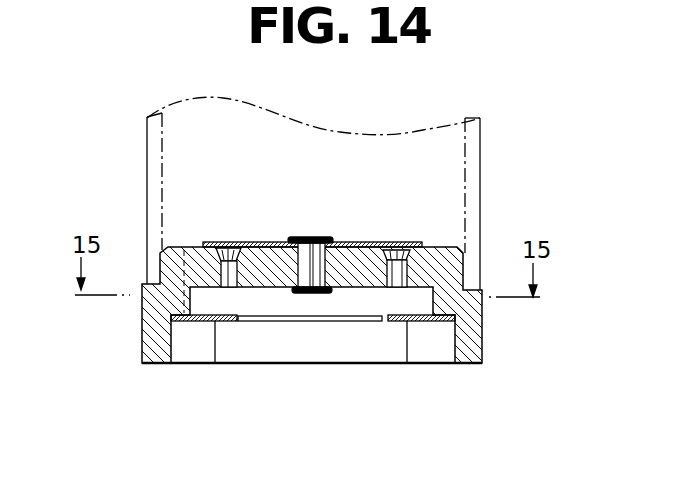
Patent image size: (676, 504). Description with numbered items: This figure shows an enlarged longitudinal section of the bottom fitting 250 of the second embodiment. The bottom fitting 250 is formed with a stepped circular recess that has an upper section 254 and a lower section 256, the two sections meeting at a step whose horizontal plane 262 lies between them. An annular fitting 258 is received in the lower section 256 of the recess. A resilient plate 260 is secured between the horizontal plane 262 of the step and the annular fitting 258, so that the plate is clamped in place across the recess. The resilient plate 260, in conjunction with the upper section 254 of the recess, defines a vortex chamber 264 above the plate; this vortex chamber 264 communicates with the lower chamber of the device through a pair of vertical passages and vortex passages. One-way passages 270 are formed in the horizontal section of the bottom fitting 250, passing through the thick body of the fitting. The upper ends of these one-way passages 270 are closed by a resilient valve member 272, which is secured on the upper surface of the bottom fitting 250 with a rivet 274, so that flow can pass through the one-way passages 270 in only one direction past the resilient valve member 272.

The bottom fitting 250 is at (463, 253).
The upper section 254 is at (422, 327).
The lower section 256 is at (455, 347).
The annular fitting 258 is at (185, 343).
The resilient plate 260 is at (203, 323).
The horizontal plane 262 is at (458, 325).
The vortex chamber 264 is at (282, 302).
The one-way passages 270 is at (228, 268).
The resilient valve member 272 is at (252, 242).
The rivet 274 is at (310, 237).